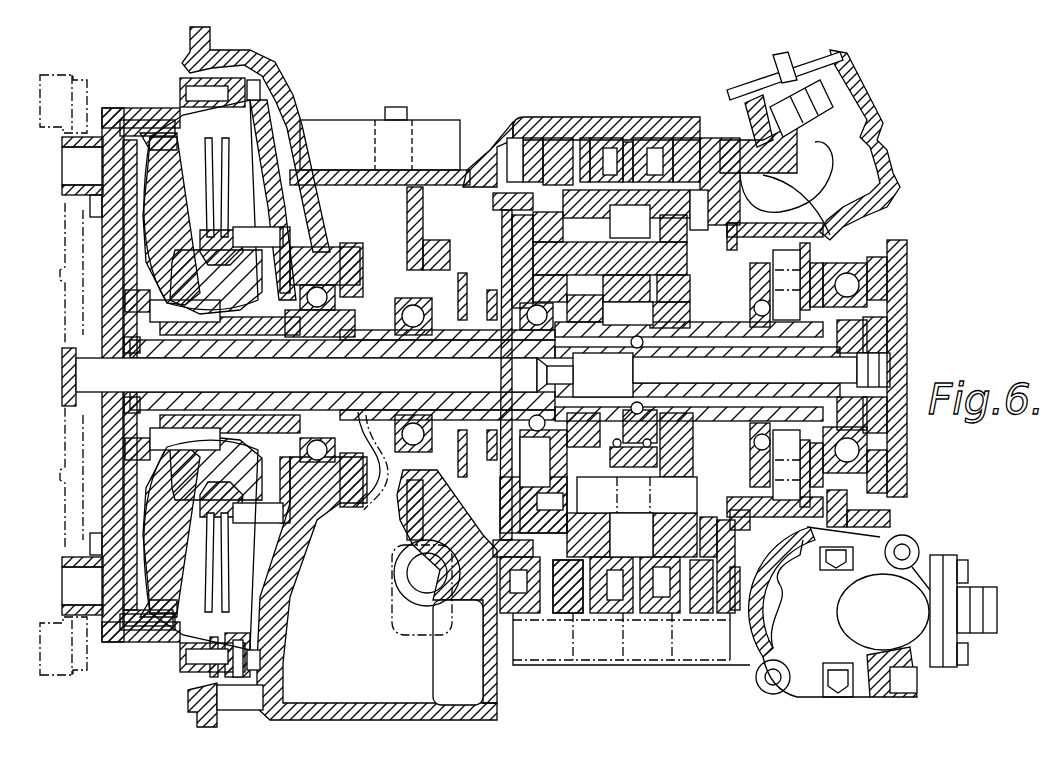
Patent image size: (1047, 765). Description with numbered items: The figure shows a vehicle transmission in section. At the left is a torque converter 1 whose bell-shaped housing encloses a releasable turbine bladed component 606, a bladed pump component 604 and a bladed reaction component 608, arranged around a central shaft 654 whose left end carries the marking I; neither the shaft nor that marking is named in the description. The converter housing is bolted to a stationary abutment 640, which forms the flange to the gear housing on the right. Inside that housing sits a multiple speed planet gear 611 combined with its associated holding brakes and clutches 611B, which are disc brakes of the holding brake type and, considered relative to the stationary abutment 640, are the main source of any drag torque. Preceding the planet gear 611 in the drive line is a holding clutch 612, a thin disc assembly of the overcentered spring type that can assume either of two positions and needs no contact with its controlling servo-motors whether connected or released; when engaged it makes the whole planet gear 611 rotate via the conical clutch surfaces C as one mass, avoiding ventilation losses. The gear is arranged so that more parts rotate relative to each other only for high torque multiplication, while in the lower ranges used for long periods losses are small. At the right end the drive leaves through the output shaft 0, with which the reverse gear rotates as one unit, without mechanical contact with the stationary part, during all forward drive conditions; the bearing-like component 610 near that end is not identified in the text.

The torque converter 1 is at (268, 108).
The stationary abutment 640 is at (308, 150).
The bladed pump component 604 is at (268, 217).
The releasable turbine bladed component 606 is at (191, 269).
The bladed reaction component 608 is at (218, 256).
The input shaft end I is at (62, 368).
The main shaft 654 is at (379, 384).
The holding clutch 612 is at (500, 262).
The conical clutch surfaces C is at (540, 225).
The multiple planet gear 611 is at (552, 180).
The holding brakes and clutches (disc brakes) 611B is at (582, 255).
The bearing 610 is at (885, 260).
The output shaft 0 is at (904, 268).